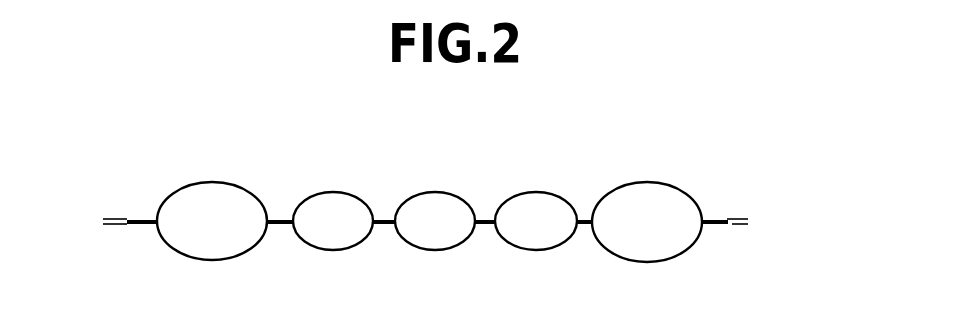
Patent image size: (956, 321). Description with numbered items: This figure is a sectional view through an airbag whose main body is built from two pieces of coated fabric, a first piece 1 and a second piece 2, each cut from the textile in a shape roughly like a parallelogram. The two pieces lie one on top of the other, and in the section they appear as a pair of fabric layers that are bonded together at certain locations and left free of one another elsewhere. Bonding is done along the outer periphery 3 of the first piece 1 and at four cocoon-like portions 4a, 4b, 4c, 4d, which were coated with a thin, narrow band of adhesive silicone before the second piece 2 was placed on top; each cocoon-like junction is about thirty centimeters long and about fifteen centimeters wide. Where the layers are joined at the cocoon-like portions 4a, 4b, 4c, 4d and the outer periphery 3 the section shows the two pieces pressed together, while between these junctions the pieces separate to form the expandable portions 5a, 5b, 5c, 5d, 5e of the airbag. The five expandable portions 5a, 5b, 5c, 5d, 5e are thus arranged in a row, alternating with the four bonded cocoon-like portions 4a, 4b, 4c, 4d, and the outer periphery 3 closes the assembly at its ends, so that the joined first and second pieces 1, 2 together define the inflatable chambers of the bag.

The first piece 1 is at (738, 217).
The second piece 2 is at (733, 225).
The outer periphery 3 is at (138, 218).
The cocoon-like portion 4a is at (280, 218).
The cocoon-like portion 4b is at (383, 218).
The cocoon-like portion 4c is at (485, 218).
The cocoon-like portion 4d is at (585, 218).
The expandable portion 5a is at (215, 248).
The expandable portion 5b is at (337, 238).
The expandable portion 5c is at (443, 238).
The expandable portion 5d is at (543, 238).
The expandable portion 5e is at (662, 248).